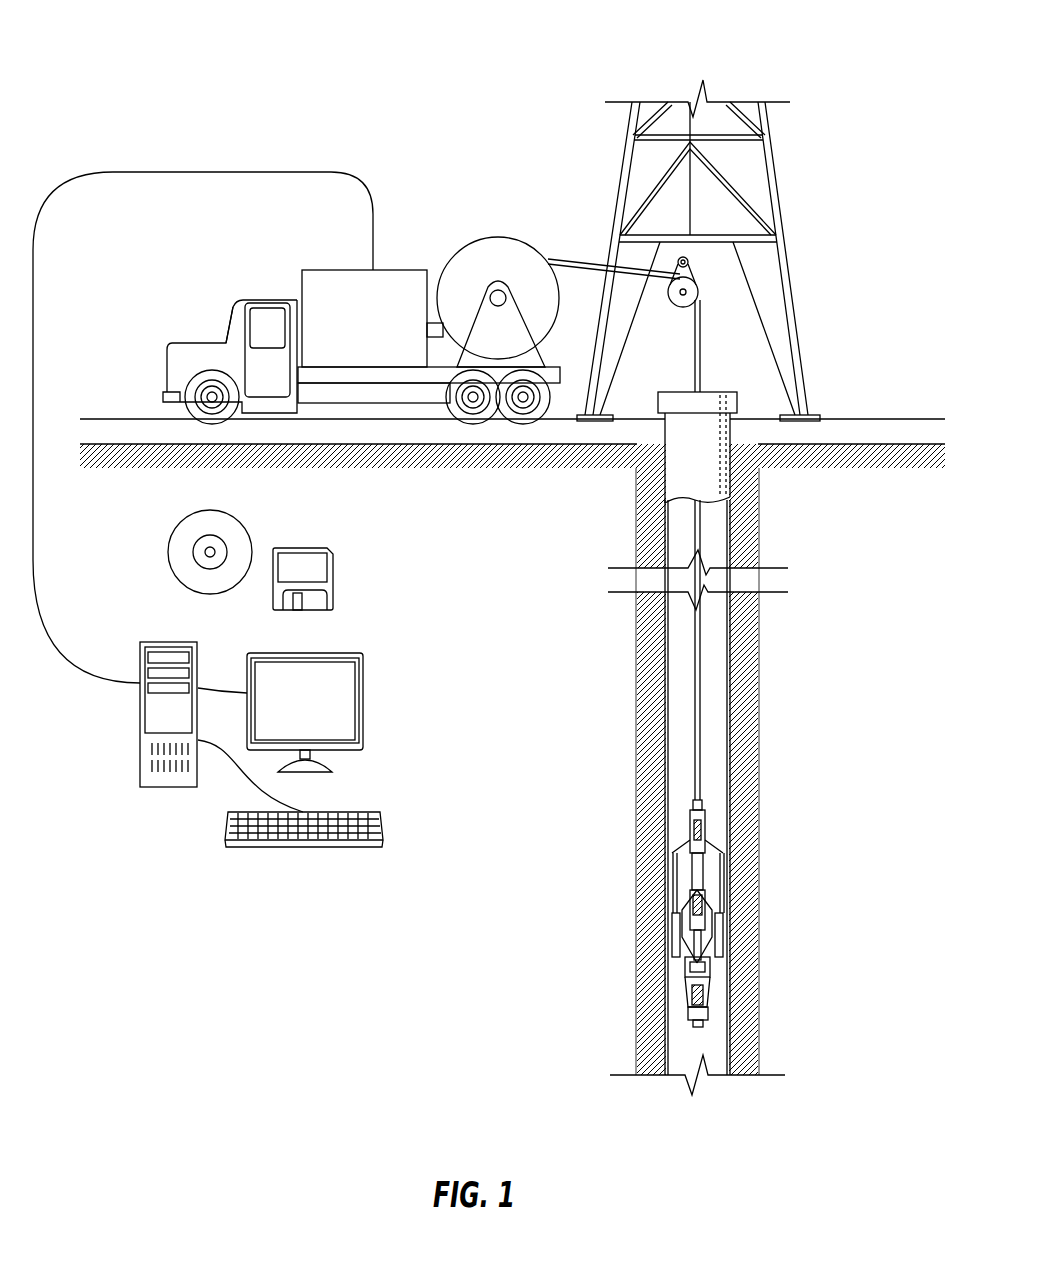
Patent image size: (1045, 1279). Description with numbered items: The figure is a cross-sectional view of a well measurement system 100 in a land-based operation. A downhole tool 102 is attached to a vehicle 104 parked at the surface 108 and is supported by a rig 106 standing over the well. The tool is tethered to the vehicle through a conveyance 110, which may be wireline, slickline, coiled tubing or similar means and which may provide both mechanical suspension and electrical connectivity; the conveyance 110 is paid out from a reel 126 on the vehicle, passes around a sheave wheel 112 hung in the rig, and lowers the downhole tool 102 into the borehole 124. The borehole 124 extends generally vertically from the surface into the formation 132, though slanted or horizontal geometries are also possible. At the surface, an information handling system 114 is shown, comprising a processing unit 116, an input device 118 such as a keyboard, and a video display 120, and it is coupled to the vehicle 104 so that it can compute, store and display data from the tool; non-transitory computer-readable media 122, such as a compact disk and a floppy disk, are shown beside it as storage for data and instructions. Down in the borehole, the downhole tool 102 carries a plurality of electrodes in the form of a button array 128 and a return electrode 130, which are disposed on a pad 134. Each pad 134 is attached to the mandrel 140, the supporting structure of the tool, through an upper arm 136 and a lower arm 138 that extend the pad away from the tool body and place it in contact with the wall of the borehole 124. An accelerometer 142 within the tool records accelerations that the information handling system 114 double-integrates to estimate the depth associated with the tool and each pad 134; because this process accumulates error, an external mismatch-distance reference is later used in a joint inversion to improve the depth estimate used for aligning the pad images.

The well measurement system 100 is at (208, 55).
The downhole tool 102 is at (656, 872).
The vehicle 104 is at (321, 270).
The rig 106 is at (778, 160).
The surface 108 is at (868, 420).
The conveyance 110 is at (695, 665).
The sheave wheel 112 is at (683, 306).
The information handling system 114 is at (182, 860).
The processing unit 116 is at (170, 642).
The input device 118 is at (383, 827).
The video display 120 is at (365, 695).
The non-transitory computer-readable media 122 is at (250, 538).
The borehole 124 is at (720, 543).
The cable reel 126 is at (487, 237).
The button array 128 is at (717, 947).
The return electrode 130 is at (720, 953).
The formation 132 is at (898, 665).
The pad 134 is at (742, 861).
The upper arm 136 is at (725, 903).
The lower arm 138 is at (680, 978).
The mandrel 140 is at (690, 928).
The accelerometer 142 is at (700, 933).